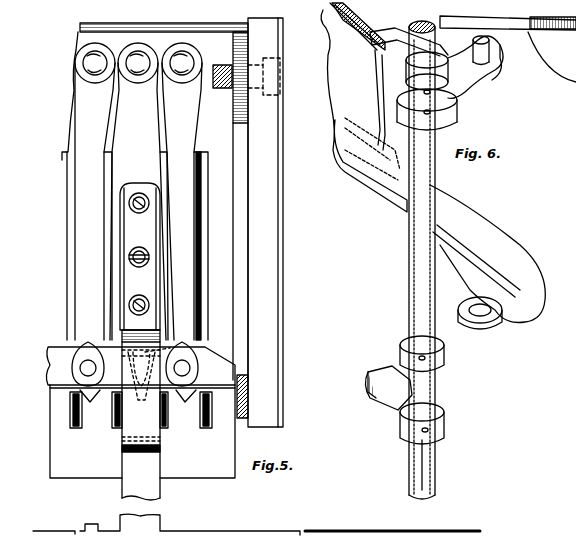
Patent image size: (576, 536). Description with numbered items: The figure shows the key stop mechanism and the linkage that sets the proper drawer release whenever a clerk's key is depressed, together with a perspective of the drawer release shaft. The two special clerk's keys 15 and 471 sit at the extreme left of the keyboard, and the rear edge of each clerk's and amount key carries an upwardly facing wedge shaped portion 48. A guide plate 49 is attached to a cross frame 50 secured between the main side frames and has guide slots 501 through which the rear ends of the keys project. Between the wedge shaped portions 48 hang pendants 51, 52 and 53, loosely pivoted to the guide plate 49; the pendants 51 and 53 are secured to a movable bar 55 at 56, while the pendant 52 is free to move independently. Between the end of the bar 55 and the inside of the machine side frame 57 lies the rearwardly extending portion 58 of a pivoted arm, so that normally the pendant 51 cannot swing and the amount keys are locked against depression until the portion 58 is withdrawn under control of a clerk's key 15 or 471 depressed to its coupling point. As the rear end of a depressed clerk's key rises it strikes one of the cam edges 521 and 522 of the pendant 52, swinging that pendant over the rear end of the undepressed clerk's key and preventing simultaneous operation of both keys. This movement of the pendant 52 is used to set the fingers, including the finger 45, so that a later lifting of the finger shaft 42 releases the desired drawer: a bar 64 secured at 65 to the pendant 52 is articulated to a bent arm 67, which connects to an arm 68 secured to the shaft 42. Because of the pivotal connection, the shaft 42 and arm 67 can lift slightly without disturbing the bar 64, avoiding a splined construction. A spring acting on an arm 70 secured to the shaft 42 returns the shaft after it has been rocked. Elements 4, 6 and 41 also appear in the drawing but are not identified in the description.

In FIG. 5, the base block 4 is at (65, 420).
In FIG. 6, the drum 6 is at (508, 49).
In FIG. 5, the clerk's key 15 is at (170, 425).
In FIG. 6, the bracket 41 is at (385, 38).
In FIG. 6, the finger shaft 42 is at (410, 303).
In FIG. 6, the finger 45 is at (380, 372).
In FIG. 5, the wedge shaped portion 48 is at (90, 400).
In FIG. 5, the guide plate 49 is at (242, 77).
In FIG. 5, the cross frame 50 is at (152, 24).
In FIG. 5, the pendant 51 is at (95, 191).
In FIG. 5, the pendant 52 is at (138, 191).
In FIG. 5, the pendant 53 is at (182, 191).
In FIG. 5, the movable bar 55 is at (55, 370).
In FIG. 5, the securing point 56 is at (85, 342).
In FIG. 5, the frame 57 is at (265, 222).
In FIG. 5, the rearwardly extending portion 58 is at (249, 392).
In FIG. 5, the bar 64 is at (141, 472).
In FIG. 6, the bar 64 is at (575, 405).
In FIG. 5, the securing point 65 is at (145, 302).
In FIG. 6, the arm 67 is at (400, 200).
In FIG. 6, the arm 68 is at (470, 338).
In FIG. 6, the arm 70 is at (480, 82).
In FIG. 5, the clerk's key 471 is at (110, 425).
In FIG. 5, the guide slot 501 is at (202, 192).
In FIG. 5, the cam edge 521 is at (170, 384).
In FIG. 5, the cam edge 522 is at (141, 420).